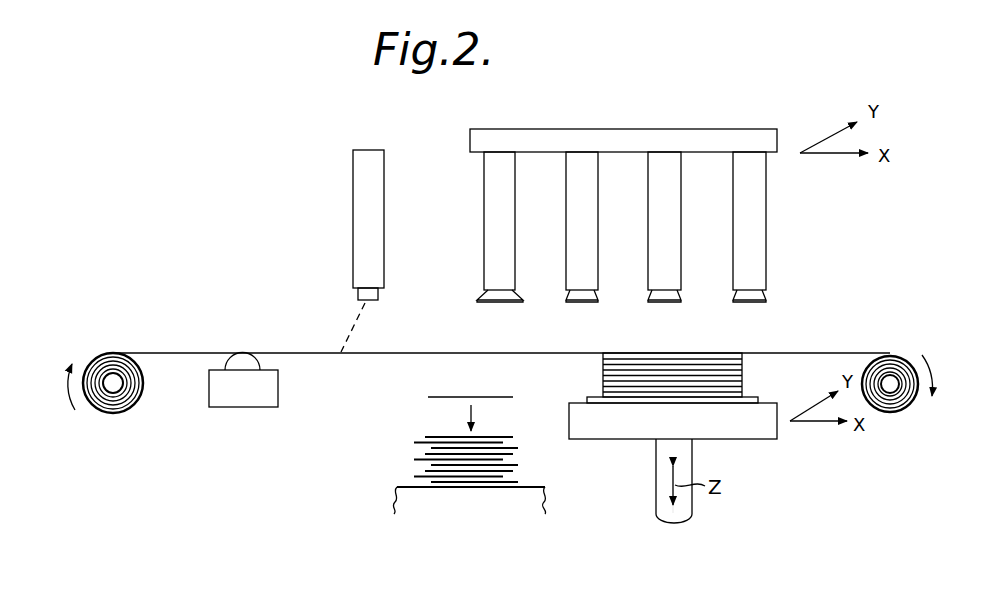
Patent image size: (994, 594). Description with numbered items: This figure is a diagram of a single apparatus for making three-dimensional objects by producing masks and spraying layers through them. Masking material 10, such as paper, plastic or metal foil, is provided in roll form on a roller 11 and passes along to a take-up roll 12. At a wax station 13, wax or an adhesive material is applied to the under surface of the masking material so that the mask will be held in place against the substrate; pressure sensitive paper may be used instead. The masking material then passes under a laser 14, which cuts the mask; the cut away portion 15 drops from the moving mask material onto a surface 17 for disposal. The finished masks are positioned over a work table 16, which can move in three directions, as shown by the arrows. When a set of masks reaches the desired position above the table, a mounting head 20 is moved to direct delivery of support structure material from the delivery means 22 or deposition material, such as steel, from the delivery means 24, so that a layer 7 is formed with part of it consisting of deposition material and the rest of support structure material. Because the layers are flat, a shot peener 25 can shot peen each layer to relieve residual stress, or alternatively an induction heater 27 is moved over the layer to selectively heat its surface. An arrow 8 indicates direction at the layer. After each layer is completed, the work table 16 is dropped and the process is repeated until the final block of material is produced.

The layer 7 is at (603, 372).
The arrow indicating stack direction 8 is at (744, 380).
The masking material 10 is at (205, 352).
The roller 11 is at (100, 416).
The take-up roll 12 is at (900, 413).
The wax station 13 is at (243, 407).
The laser 14 is at (353, 245).
The cut away portion 15 is at (448, 397).
The work table 16 is at (638, 415).
The surface 17 is at (398, 487).
The head 20 is at (472, 140).
The delivery means 22 is at (676, 258).
The delivery means 24 is at (767, 226).
The shot peener 25 is at (597, 268).
The induction heater 27 is at (484, 229).